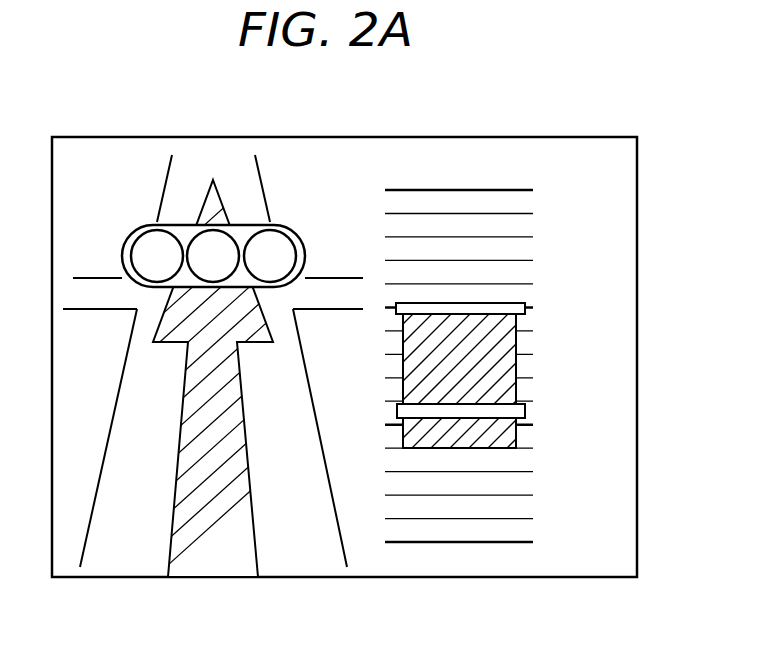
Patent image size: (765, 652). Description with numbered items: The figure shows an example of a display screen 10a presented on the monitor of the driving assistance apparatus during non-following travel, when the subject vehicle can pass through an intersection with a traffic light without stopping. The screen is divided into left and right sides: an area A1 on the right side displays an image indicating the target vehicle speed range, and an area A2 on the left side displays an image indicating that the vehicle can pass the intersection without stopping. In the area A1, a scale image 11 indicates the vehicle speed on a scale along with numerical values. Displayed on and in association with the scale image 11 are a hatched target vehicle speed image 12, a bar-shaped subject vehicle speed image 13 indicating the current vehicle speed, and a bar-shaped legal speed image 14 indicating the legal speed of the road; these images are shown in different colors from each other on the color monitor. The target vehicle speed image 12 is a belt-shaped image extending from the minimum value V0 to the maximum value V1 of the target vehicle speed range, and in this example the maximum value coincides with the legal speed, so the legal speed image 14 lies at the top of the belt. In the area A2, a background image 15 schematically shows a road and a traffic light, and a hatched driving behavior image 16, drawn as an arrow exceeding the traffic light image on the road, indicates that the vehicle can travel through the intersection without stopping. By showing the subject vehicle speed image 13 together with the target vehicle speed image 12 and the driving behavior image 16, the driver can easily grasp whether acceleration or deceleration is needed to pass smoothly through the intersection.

The display screen 10a is at (337, 157).
The scale image 11 is at (468, 543).
The target vehicle speed image 12 is at (516, 361).
The subject vehicle speed image 13 is at (458, 418).
The legal speed image 14 is at (498, 303).
The background image 15 is at (292, 543).
The driving behavior image 16 is at (172, 530).
The area A1 is at (495, 161).
The area A2 is at (200, 166).
The minimum value V0 is at (450, 450).
The maximum value V1 is at (420, 303).